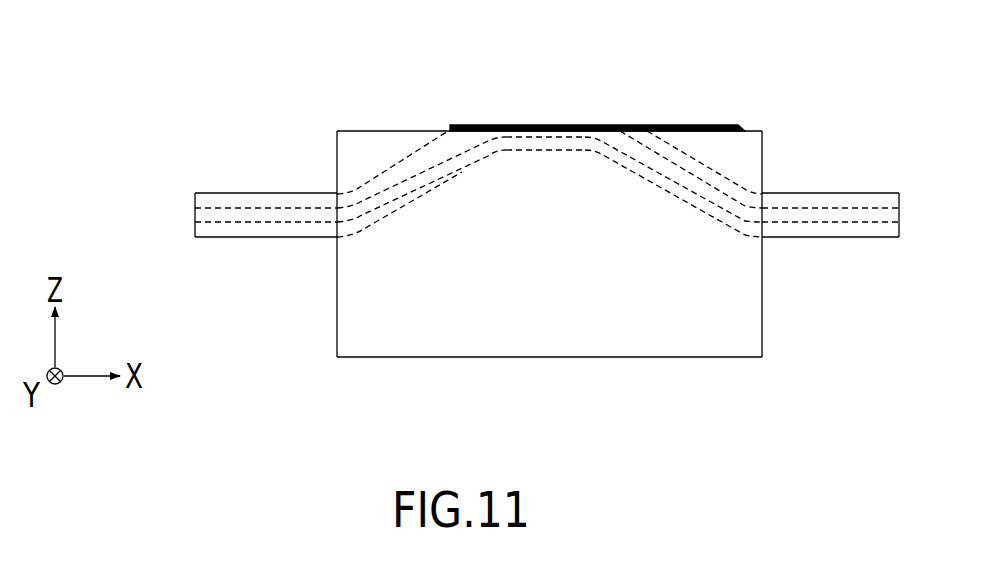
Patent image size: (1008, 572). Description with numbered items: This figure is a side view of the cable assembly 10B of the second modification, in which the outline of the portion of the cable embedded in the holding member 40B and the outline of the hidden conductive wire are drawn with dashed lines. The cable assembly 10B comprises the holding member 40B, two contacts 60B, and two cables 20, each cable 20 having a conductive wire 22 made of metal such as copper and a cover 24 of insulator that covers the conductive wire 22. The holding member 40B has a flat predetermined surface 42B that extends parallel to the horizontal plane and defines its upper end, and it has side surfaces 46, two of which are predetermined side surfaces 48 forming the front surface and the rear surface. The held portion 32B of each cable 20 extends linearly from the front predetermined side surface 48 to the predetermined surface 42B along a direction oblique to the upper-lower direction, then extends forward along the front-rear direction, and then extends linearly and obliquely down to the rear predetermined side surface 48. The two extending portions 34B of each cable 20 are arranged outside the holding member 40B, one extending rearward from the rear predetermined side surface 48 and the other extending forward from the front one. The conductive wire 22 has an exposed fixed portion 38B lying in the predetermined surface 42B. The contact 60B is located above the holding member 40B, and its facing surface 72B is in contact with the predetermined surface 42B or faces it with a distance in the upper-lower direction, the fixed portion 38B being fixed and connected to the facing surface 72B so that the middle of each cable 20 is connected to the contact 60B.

The cable assembly 10B is at (177, 36).
The cable 20 is at (195, 193).
The conductive wire 22 is at (303, 224).
The cover 24 is at (225, 238).
The extending portion 34B is at (336, 192).
The predetermined surface 42B is at (394, 131).
The fixed portion 38B is at (484, 130).
The contact 60B is at (682, 125).
The holding member 40B is at (765, 128).
The predetermined side surface 48 is at (337, 334).
The side surface 46 is at (548, 381).
The held portion 32B is at (457, 175).
The facing surface 72B is at (503, 131).